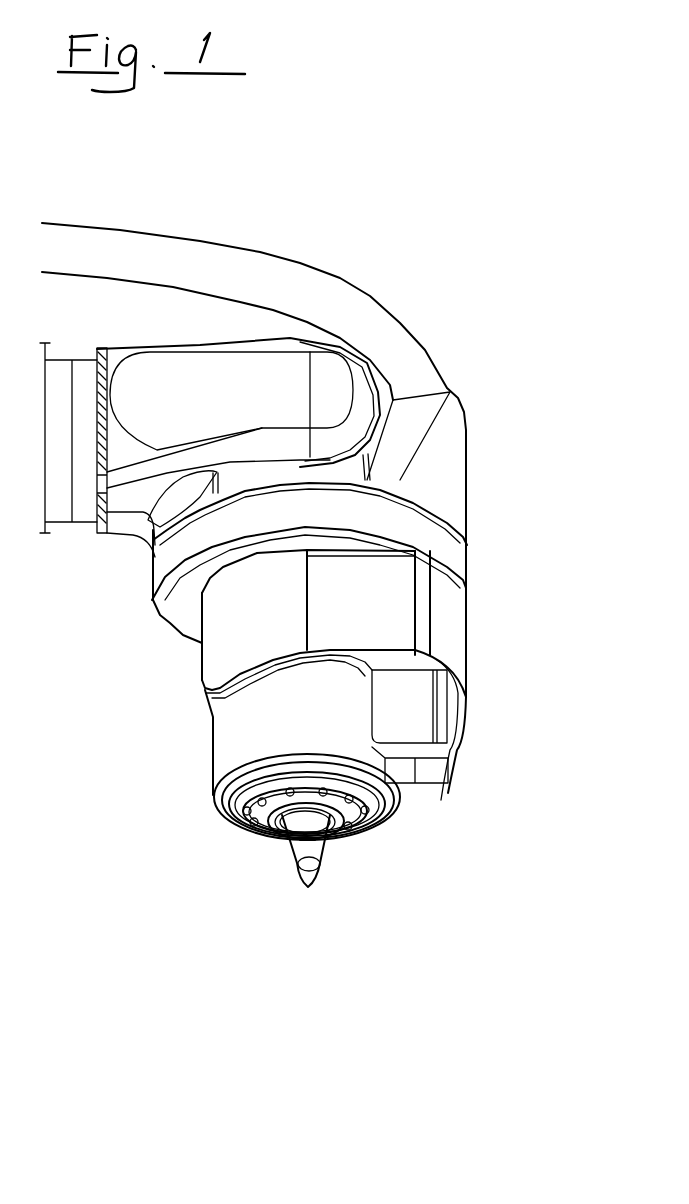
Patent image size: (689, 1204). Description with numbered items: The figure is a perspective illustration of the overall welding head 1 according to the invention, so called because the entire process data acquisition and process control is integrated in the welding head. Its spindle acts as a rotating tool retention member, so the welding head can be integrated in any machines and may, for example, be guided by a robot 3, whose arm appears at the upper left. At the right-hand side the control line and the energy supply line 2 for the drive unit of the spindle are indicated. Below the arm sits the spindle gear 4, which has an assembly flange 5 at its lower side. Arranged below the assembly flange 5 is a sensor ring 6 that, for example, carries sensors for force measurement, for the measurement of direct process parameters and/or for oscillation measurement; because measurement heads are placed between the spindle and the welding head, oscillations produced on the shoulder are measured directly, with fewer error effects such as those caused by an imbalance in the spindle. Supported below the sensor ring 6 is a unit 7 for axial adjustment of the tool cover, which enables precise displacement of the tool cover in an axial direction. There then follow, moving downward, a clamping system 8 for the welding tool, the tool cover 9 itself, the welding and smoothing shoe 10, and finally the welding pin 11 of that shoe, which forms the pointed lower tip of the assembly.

The cylindrical body 1 is at (395, 603).
The energy supply line 2 is at (405, 522).
The robot 3 is at (218, 383).
The spindle gear 4 is at (335, 717).
The assembly flange 5 is at (325, 760).
The sensor ring 6 is at (353, 763).
The unit for axial adjustment of the tool cover 7 is at (373, 798).
The clamping system 8 is at (360, 817).
The tool cover 9 is at (327, 842).
The welding and smoothing shoe 10 is at (320, 872).
The welding pin 11 is at (307, 892).